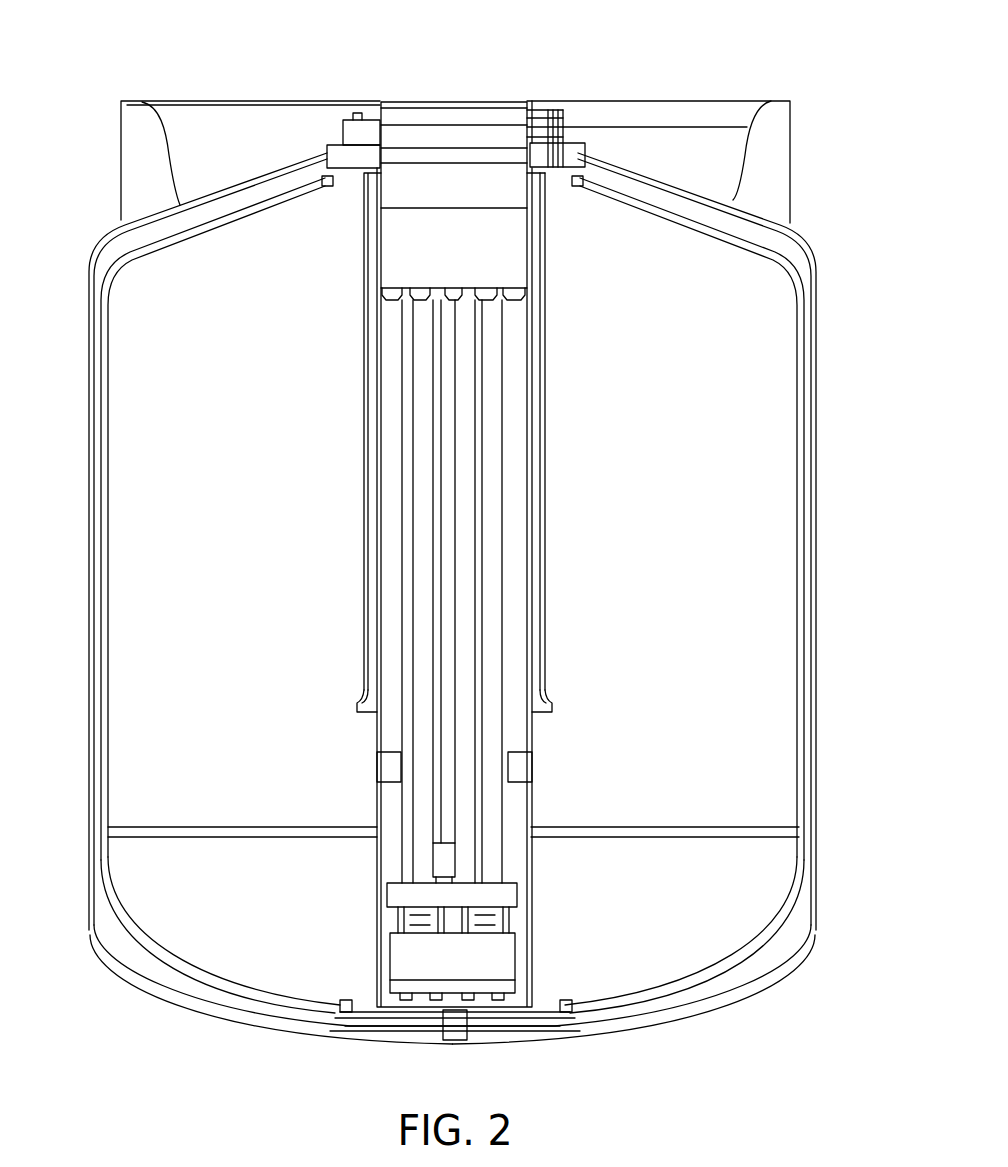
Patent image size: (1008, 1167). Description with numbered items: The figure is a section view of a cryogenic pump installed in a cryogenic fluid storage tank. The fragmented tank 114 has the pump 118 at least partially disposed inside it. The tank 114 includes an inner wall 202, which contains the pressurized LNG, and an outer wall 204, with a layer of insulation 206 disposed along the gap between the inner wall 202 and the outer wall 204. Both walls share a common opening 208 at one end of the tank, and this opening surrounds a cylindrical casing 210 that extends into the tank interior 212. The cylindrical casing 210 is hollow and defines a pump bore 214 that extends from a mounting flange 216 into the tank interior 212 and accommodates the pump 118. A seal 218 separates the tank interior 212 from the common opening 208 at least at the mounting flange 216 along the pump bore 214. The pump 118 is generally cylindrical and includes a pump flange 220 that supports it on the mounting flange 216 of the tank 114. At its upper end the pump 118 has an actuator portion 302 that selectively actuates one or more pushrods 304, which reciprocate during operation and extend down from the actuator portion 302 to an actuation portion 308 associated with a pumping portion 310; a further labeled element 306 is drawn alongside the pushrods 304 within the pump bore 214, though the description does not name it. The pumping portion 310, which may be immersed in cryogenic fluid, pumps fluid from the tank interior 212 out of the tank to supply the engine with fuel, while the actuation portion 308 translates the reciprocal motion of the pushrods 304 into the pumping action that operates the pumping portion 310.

The tank 114 is at (817, 612).
The pump 118 is at (508, 76).
The inner wall 202 is at (777, 905).
The outer wall 204 is at (727, 995).
The layer of insulation 206 is at (793, 928).
The common opening 208 is at (350, 68).
The cylindrical casing 210 is at (545, 477).
The tank interior 212 is at (770, 688).
The pump bore 214 is at (545, 573).
The mounting flange 216 is at (573, 150).
The seal 218 is at (515, 775).
The pump flange 220 is at (347, 108).
The actuator portion 302 is at (437, 185).
The pushrods 304 is at (418, 537).
The center rod 306 is at (453, 628).
The actuation portion 308 is at (517, 893).
The pumping portion 310 is at (387, 963).